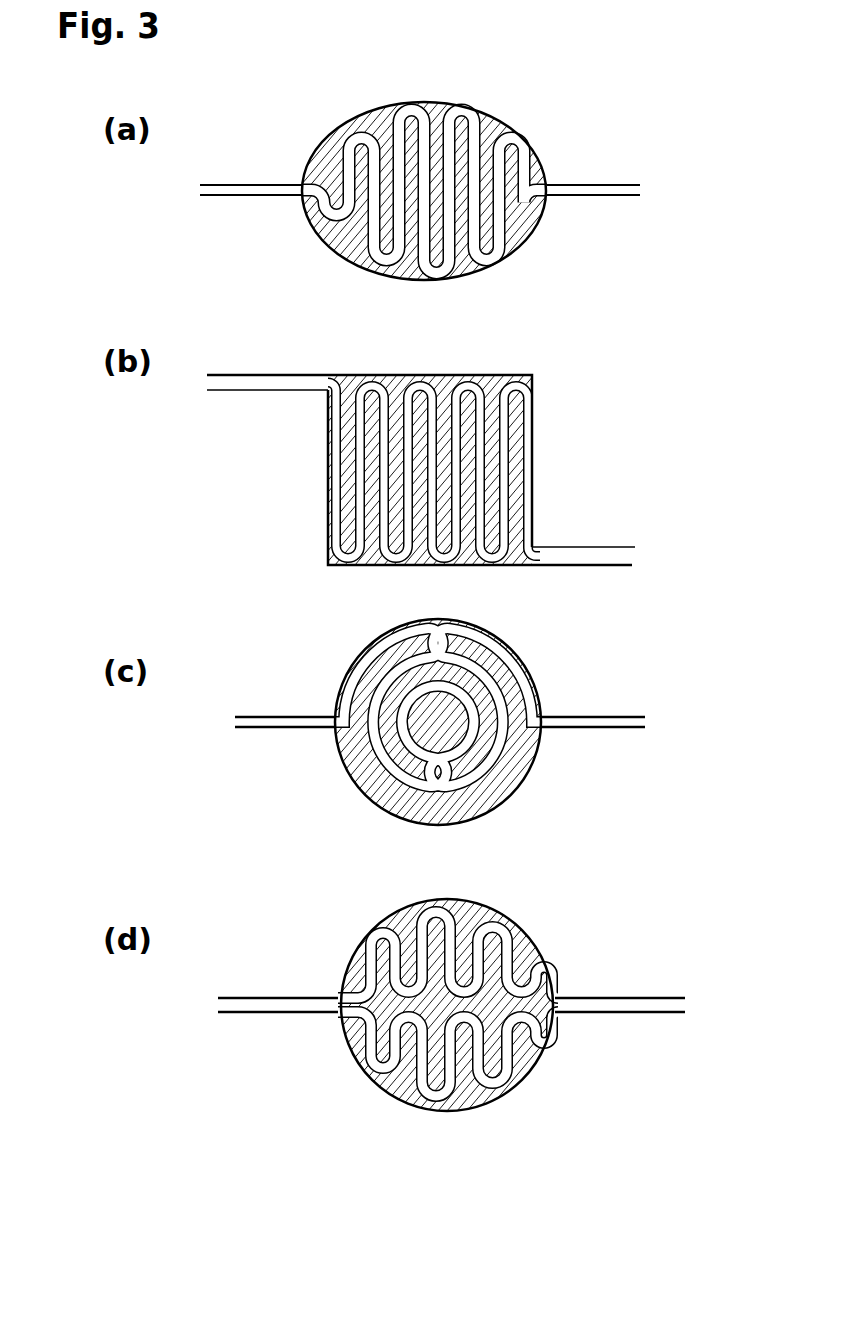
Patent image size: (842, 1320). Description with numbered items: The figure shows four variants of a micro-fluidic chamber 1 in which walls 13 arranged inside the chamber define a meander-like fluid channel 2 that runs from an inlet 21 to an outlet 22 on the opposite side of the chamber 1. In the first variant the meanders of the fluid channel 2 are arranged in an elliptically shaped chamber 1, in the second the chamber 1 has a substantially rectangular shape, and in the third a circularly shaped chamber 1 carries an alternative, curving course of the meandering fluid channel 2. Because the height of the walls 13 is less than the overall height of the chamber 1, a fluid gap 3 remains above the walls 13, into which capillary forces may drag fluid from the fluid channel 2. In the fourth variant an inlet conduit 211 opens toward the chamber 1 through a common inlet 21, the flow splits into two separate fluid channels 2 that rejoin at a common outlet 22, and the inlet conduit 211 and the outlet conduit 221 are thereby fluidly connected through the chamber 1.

The micro-fluidic chamber 1 is at (445, 597).
The fluid channel 2 is at (392, 606).
The fluid gap 3 is at (438, 610).
The walls 13 is at (451, 622).
The inlet 21 is at (269, 593).
The outlet 22 is at (608, 543).
The inlet conduit 211 is at (268, 956).
The outlet conduit 221 is at (628, 1055).